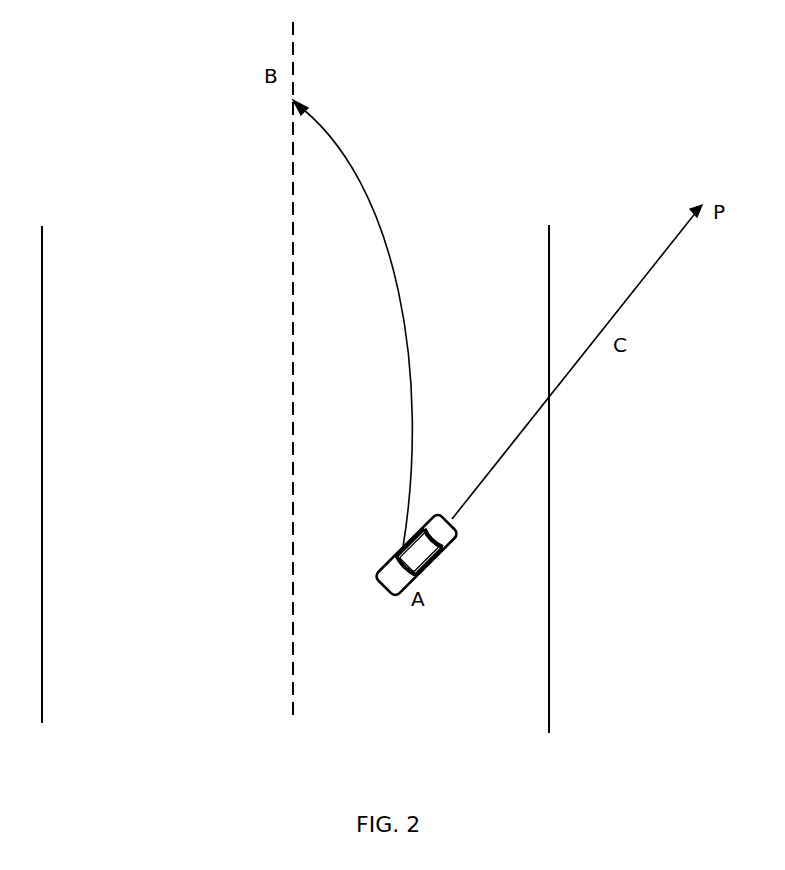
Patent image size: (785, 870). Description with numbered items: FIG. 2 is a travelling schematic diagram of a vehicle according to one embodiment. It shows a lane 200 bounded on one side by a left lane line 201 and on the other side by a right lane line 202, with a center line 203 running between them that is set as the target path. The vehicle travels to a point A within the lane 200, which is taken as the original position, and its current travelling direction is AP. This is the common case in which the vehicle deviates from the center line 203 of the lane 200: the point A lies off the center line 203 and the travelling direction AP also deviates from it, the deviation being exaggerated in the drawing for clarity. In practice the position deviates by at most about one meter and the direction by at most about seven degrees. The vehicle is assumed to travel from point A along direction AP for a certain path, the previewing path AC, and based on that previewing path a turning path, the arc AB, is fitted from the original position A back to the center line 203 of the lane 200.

The lane 200 is at (339, 402).
The left lane line 201 is at (42, 503).
The right lane line 202 is at (549, 648).
The center line 203 is at (293, 690).